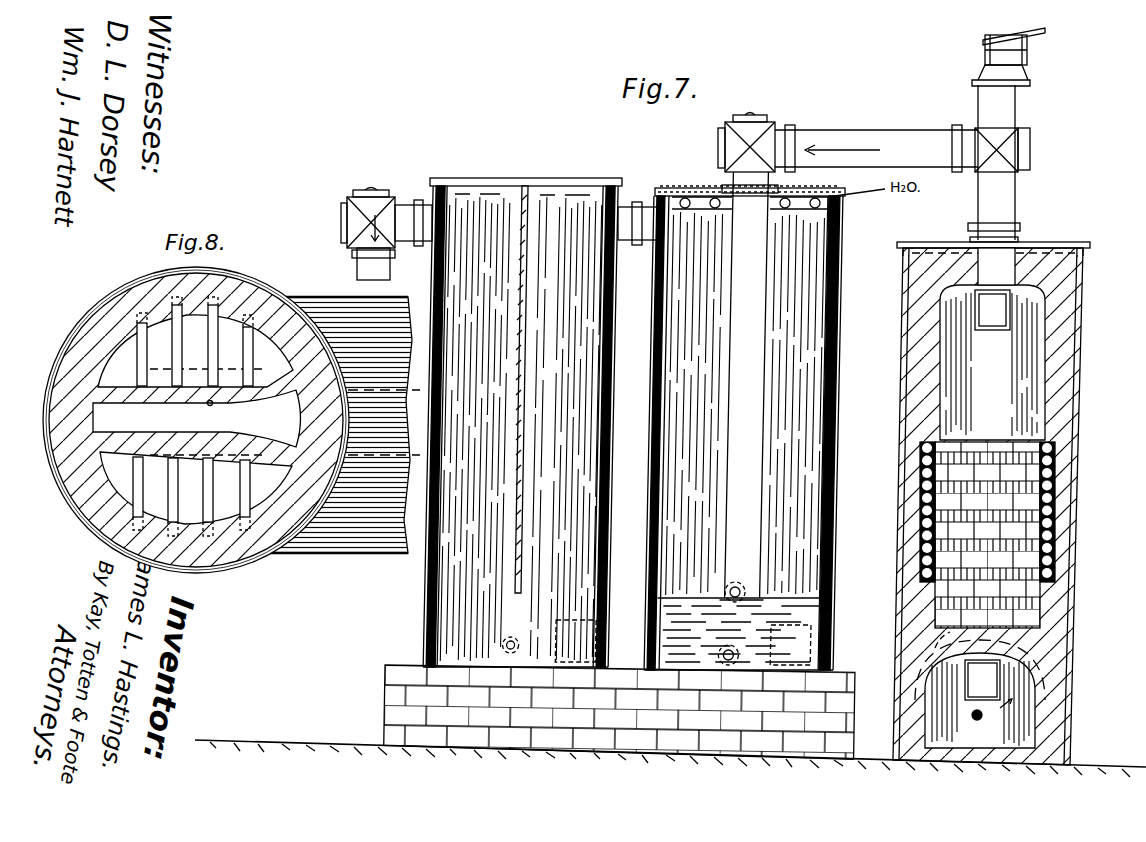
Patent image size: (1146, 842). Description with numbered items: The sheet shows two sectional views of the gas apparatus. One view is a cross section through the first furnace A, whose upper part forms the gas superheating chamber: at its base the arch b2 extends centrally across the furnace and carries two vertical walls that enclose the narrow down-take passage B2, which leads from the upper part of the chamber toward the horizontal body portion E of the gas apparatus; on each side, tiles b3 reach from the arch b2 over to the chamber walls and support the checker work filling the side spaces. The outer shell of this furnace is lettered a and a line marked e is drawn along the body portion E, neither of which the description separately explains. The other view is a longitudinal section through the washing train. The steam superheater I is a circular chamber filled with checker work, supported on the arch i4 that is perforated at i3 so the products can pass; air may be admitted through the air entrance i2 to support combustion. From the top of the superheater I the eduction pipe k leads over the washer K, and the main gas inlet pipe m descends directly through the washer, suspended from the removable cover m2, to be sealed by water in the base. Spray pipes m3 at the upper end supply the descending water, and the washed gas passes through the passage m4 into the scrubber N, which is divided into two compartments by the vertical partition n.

In FIG. 7, the scrubber N is at (616, 600).
In FIG. 7, the vertical partition n is at (530, 240).
In FIG. 7, the passage m4 is at (640, 242).
In FIG. 7, the washer K is at (743, 433).
In FIG. 7, the main gas inlet pipe m is at (748, 357).
In FIG. 7, the cover m2 is at (703, 188).
In FIG. 7, the water spray pipe m3 is at (700, 212).
In FIG. 7, the eduction pipe k is at (902, 182).
In FIG. 7, the steam superheater I is at (992, 503).
In FIG. 7, the air entrance i2 is at (972, 716).
In FIG. 7, the perforation i3 is at (980, 690).
In FIG. 7, the arch i4 is at (942, 642).
In FIG. 7, the air inlet a is at (1001, 716).
In FIG. 8, the air inlet a is at (255, 284).
In FIG. 8, the first furnace A is at (190, 420).
In FIG. 8, the down-take passage B2 is at (197, 418).
In FIG. 8, the arch b2 is at (207, 431).
In FIG. 8, the tiles b3 is at (196, 429).
In FIG. 8, the horizontal body portion E is at (331, 425).
In FIG. 8, the axis line e is at (360, 410).